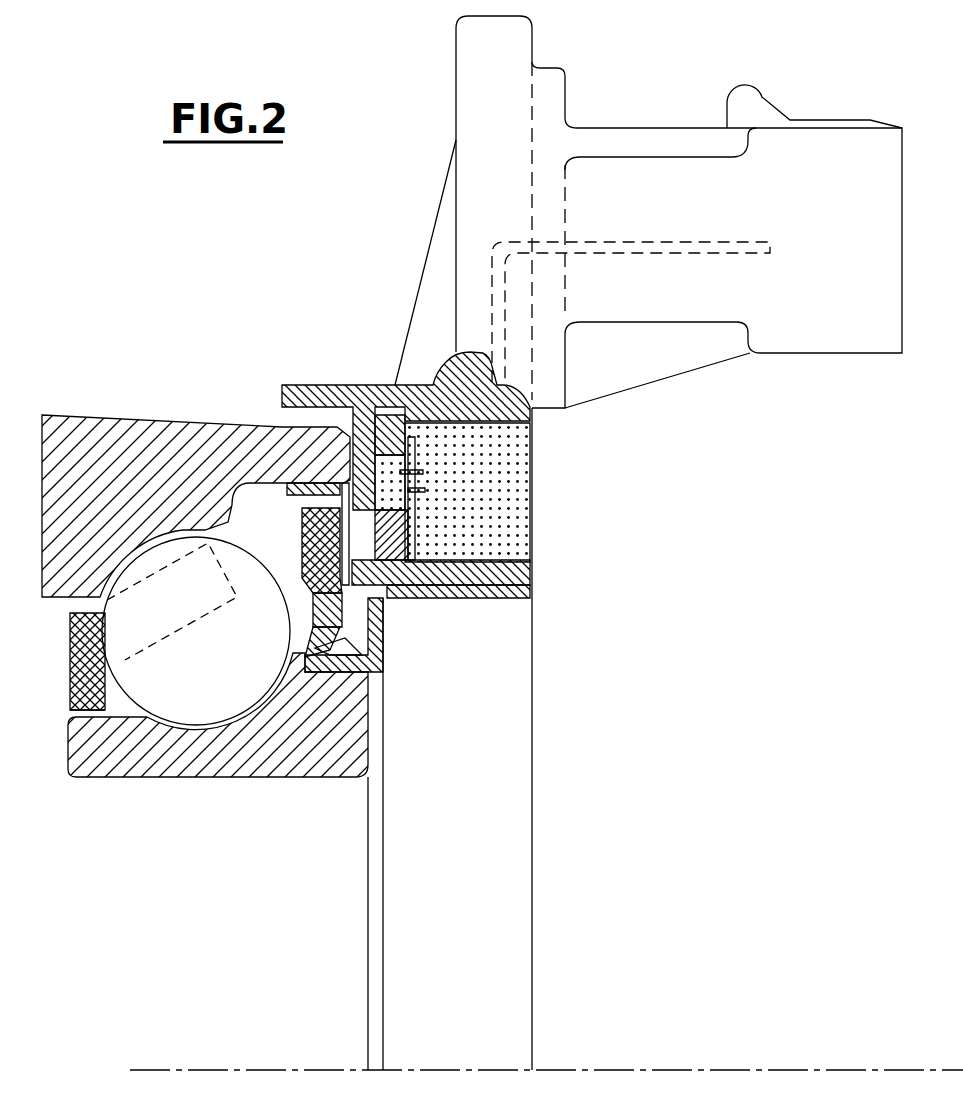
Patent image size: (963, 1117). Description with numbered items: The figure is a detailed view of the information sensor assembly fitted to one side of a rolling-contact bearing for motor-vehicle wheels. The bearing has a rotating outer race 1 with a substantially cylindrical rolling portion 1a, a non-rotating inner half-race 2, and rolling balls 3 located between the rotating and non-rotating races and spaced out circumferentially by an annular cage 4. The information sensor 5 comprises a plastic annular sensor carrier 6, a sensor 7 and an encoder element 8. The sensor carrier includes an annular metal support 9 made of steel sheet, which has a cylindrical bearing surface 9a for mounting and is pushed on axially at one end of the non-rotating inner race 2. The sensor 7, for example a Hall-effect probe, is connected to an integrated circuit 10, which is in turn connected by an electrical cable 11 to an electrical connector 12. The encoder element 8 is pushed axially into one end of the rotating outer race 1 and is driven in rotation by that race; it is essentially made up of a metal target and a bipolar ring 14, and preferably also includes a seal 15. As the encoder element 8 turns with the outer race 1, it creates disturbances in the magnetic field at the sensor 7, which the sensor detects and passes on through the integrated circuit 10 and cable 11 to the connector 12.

The rotating outer race 1 is at (196, 464).
The cylindrical rolling portion 1a is at (137, 448).
The non-rotating inner half-race 2 is at (140, 747).
The rolling ball 3 is at (200, 687).
The annular cage 4 is at (88, 680).
The information sensor 5 is at (542, 720).
The plastic annular sensor carrier 6 is at (477, 773).
The sensor 7 is at (413, 543).
The encoder element 8 is at (298, 547).
The annular metal support 9 is at (373, 630).
The cylindrical bearing surface 9a is at (337, 663).
The integrated circuit 10 is at (417, 527).
The electrical cable 11 is at (433, 395).
The electrical connector 12 is at (688, 337).
The bipolar ring 14 is at (312, 492).
The seal 15 is at (303, 660).